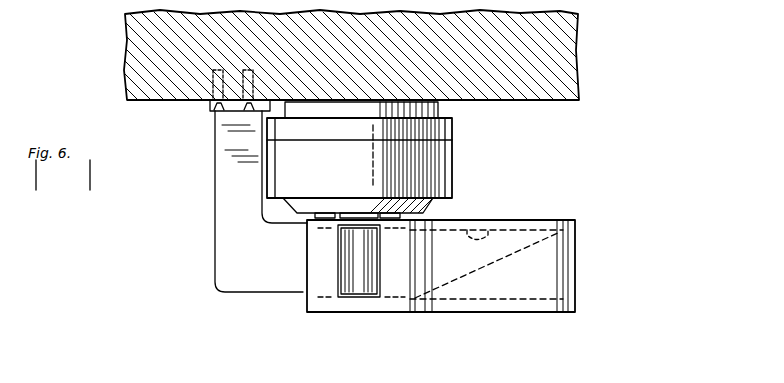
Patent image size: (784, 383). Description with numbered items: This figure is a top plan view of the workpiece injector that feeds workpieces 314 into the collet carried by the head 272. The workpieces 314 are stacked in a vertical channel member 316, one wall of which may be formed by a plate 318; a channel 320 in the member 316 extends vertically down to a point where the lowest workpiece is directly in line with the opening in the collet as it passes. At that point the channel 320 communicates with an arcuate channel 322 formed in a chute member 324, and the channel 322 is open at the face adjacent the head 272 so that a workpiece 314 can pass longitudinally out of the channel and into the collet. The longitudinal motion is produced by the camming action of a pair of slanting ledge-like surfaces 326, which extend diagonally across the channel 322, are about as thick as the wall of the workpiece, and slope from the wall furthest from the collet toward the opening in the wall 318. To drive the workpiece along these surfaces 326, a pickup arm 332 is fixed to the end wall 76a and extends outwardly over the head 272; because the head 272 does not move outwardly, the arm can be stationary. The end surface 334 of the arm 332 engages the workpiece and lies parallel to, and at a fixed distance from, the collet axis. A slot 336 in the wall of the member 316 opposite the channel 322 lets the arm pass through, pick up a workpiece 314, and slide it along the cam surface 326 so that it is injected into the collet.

The end wall 76a is at (562, 95).
The head 272 is at (490, 169).
The plate 318 is at (533, 220).
The arcuate channel 322 is at (487, 235).
The slanting ledge-like surfaces 326 is at (510, 247).
The chute member 324 is at (570, 277).
The pickup arm 332 is at (227, 275).
The slot 336 is at (330, 292).
The vertical channel member 316 is at (328, 272).
The end surface 334 is at (353, 275).
The workpiece 314 is at (362, 270).
The channel 320 is at (380, 265).